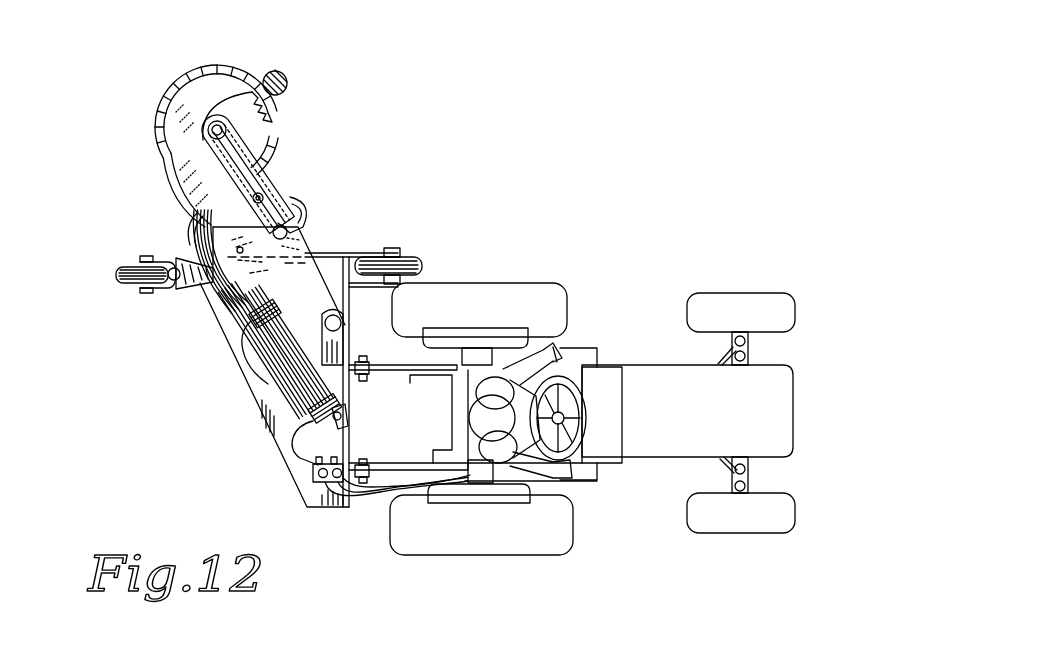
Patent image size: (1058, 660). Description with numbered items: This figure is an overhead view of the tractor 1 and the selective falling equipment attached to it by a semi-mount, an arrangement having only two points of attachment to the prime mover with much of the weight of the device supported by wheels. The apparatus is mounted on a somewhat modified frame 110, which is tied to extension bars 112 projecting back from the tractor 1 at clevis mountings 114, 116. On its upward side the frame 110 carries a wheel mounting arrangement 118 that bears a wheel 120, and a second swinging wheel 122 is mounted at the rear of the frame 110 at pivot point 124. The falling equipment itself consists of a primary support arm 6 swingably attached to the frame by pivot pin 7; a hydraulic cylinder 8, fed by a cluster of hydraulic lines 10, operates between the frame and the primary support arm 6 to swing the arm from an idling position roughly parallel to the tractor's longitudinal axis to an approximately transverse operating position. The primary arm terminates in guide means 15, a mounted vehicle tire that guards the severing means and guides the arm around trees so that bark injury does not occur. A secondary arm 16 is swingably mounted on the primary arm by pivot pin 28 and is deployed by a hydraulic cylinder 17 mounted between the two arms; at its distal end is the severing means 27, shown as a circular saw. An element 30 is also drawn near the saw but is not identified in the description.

The tractor 1 is at (640, 343).
The primary support arm 6 is at (318, 243).
The pivot pin 7 is at (323, 314).
The hydraulic cylinder 8 is at (300, 369).
The cluster of lines 10 is at (233, 348).
The guide means 15 is at (210, 66).
The secondary arm 16 is at (272, 182).
The hydraulic cylinder 17 is at (194, 222).
The severing means 27 is at (266, 122).
The pivot pin 28 is at (302, 203).
The knob 30 is at (291, 88).
The frame 110 is at (290, 459).
The extension bars 112 is at (420, 452).
The clevis mounting 114 is at (363, 360).
The clevis mounting 116 is at (361, 457).
The wheel mounting arrangement 118 is at (393, 253).
The wheel 120 is at (423, 266).
The second swinging wheel 122 is at (118, 281).
The pivot point 124 is at (177, 285).